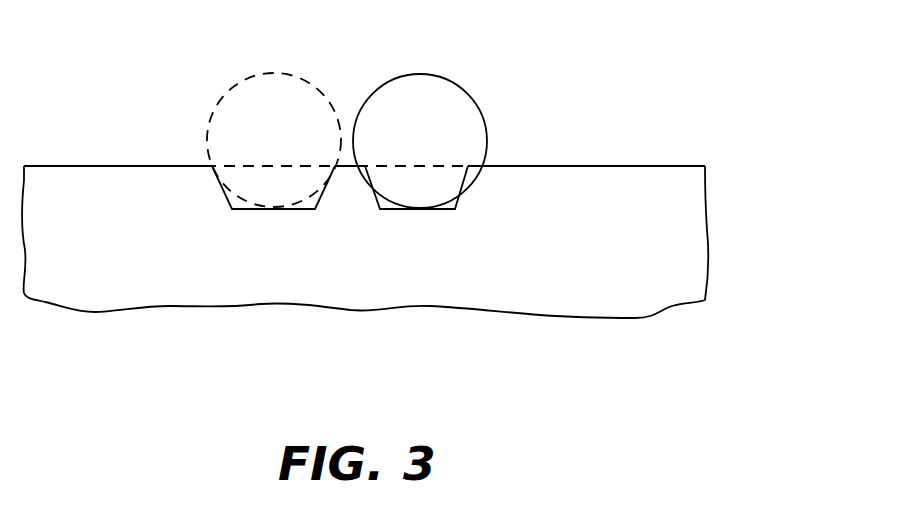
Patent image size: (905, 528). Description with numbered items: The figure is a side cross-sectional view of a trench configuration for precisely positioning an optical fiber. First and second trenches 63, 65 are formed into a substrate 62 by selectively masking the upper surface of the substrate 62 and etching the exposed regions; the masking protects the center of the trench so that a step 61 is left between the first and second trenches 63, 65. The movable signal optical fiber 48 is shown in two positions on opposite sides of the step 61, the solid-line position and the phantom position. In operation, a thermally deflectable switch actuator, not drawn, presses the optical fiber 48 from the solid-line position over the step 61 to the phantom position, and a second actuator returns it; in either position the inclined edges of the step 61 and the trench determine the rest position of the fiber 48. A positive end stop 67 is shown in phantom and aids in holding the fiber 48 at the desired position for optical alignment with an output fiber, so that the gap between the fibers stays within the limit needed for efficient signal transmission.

The movable signal optical fiber 48 is at (450, 107).
The positive end stop 67 is at (455, 166).
The step 61 is at (348, 195).
The substrate 62 is at (655, 273).
The first trench 63 is at (245, 210).
The second trench 65 is at (452, 210).